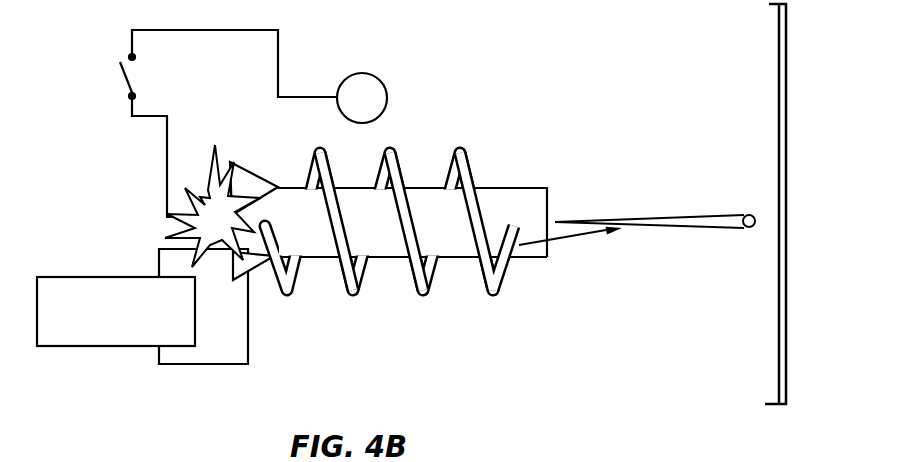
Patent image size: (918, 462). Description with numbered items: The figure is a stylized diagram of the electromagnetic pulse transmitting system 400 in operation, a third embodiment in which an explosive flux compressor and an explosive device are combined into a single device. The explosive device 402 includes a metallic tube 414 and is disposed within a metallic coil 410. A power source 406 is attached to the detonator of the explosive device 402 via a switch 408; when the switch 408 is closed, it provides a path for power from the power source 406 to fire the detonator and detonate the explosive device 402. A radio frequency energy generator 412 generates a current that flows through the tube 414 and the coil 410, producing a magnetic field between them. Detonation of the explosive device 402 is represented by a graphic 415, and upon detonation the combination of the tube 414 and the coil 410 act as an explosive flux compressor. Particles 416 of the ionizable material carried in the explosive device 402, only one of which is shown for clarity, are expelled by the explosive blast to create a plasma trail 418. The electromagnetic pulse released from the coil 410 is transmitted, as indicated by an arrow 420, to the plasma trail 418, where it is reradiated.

The electromagnetic pulse transmitting system 400 is at (786, 212).
The explosive device 402 is at (534, 268).
The power source 406 is at (380, 90).
The switch 408 is at (128, 86).
The metallic coil 410 is at (427, 297).
The radio frequency energy generator 412 is at (78, 340).
The metallic tube 414 is at (508, 188).
The graphic 415 is at (213, 168).
The particles 416 is at (748, 214).
The plasma trail 418 is at (689, 231).
The arrow 420 is at (567, 237).